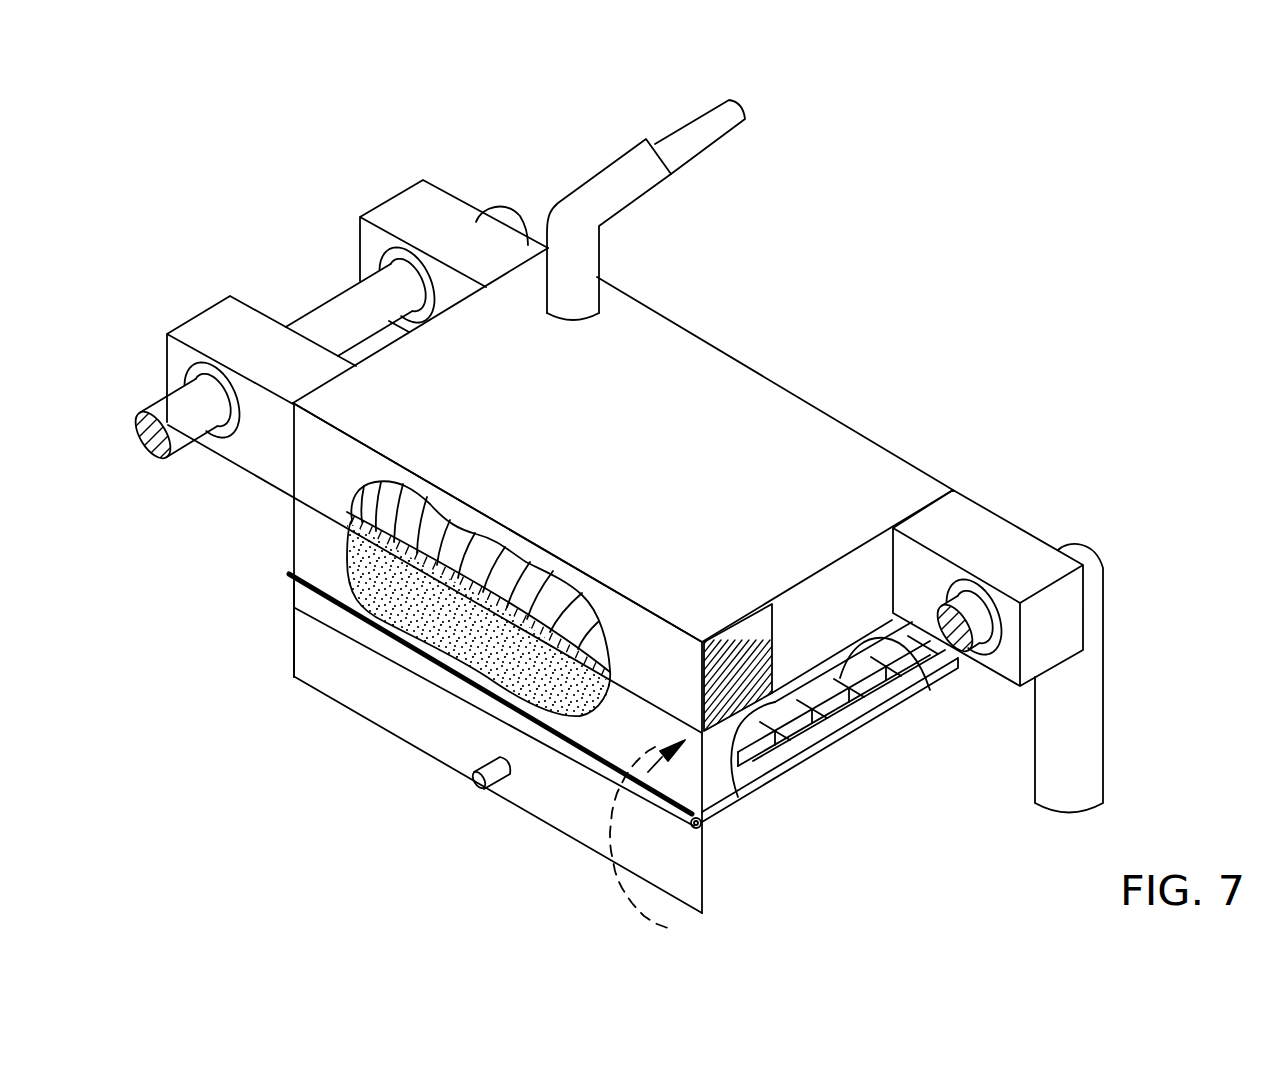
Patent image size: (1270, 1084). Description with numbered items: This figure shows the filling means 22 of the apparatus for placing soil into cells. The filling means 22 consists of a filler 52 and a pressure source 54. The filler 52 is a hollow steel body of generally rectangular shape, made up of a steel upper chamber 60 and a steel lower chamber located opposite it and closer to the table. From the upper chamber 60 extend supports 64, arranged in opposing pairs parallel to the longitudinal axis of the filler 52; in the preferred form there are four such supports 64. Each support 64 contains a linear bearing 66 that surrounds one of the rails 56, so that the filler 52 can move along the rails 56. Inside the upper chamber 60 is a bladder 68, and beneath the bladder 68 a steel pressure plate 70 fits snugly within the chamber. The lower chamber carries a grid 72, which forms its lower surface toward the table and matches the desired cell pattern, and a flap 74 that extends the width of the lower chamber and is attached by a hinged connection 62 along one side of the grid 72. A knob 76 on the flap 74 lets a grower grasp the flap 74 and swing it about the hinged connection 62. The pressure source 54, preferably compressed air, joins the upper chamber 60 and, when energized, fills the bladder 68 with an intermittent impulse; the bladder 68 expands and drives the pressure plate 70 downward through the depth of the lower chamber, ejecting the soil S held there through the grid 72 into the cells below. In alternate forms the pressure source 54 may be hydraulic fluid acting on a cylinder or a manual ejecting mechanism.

The filling means 22 is at (660, 506).
The filler 52 is at (413, 527).
The pressure source 54 is at (735, 114).
The rails 56 is at (320, 325).
The upper chamber 60 is at (800, 423).
The hinge rod 62 is at (640, 742).
The supports 64 is at (418, 200).
The linear bearing 66 is at (390, 260).
The bladder 68 is at (307, 497).
The pressure plate 70 is at (438, 566).
The grid 72 is at (822, 748).
The flap 74 is at (435, 733).
The knob 76 is at (480, 787).
The soil S is at (457, 620).